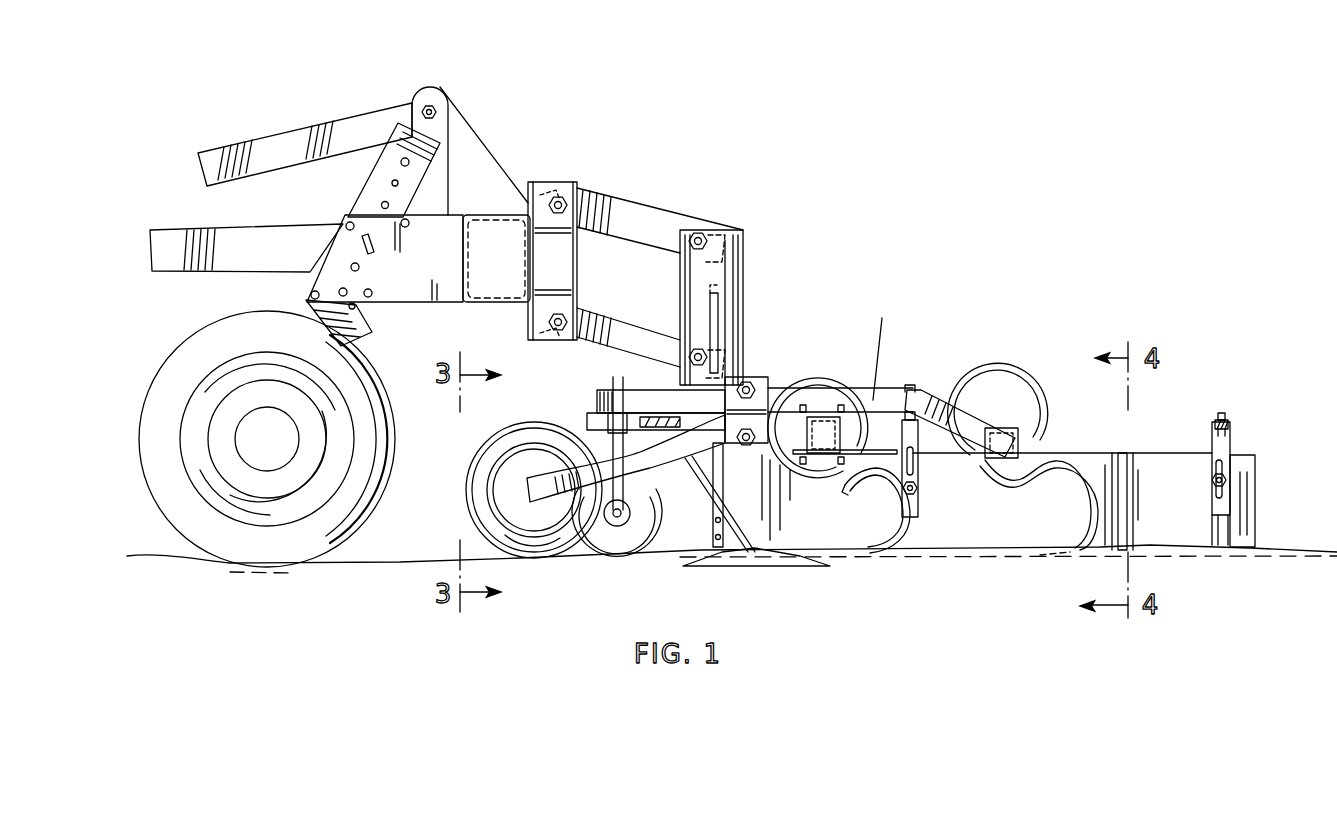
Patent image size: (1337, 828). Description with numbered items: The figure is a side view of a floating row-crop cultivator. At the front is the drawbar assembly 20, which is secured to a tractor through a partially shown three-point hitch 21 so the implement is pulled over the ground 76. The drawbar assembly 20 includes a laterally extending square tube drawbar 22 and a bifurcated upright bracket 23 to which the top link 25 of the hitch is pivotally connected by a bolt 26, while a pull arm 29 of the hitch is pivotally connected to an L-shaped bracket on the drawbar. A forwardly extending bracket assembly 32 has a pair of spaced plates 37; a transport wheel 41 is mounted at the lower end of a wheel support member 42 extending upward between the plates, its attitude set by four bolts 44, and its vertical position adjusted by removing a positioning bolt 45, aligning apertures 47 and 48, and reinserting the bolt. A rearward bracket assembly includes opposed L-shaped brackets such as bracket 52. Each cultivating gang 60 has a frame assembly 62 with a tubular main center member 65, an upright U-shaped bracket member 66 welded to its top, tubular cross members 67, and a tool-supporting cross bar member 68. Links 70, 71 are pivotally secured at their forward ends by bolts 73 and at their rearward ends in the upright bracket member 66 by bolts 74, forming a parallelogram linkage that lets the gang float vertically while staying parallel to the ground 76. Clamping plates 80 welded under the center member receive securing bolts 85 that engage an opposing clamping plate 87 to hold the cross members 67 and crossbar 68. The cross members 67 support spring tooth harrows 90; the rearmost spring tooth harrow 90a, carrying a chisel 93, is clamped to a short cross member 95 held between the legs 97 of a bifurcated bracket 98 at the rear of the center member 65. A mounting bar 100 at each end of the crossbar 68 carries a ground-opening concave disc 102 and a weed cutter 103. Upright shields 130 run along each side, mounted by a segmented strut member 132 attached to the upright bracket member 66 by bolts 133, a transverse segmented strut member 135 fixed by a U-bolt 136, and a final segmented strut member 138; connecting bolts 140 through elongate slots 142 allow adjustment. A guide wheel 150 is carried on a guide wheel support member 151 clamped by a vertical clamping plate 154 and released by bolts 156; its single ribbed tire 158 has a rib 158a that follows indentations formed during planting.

The drawbar assembly 20 is at (447, 66).
The 3-point hitch 21 is at (147, 175).
The square tube drawbar 22 is at (478, 300).
The bifurcated upright bracket 23 is at (452, 113).
The top link 25 is at (282, 140).
The bolt 26 is at (428, 108).
The pull arm 29 is at (172, 232).
The bifurcated forwardly extending bracket assembly 32 is at (326, 203).
The spaced plates 37 is at (412, 305).
The transport wheel 41 is at (198, 415).
The wheel support member 42 is at (307, 313).
The bolts 44 is at (405, 228).
The positioning bolt 45 is at (362, 240).
The apertures 47 is at (354, 309).
The apertures 48 is at (402, 162).
The L-shaped bracket 52 is at (547, 183).
The cultivating gang 60 is at (930, 278).
The frame assembly 62 is at (760, 328).
The main center member 65 is at (880, 346).
The upright U-shaped bracket member 66 is at (730, 253).
The tubular cross members 67 is at (827, 417).
The tool-supporting cross bar member 68 is at (650, 393).
The link 70 is at (650, 216).
The link 71 is at (627, 333).
The bolts 73 is at (562, 203).
The bolts 74 is at (701, 236).
The ground 76 is at (340, 594).
The clamping plates 80 is at (665, 413).
The securing bolts 85 is at (840, 408).
The opposing clamping plate 87 is at (686, 432).
The spring tooth harrows 90 is at (907, 527).
The rearmost spring tooth harrow 90a is at (1002, 380).
The chisel 93 is at (1057, 557).
The short cross member 95 is at (1018, 438).
The legs 97 is at (977, 427).
The bifurcated bracket 98 is at (940, 403).
The mounting bar 100 is at (587, 423).
The ground-opening concave disc 102 is at (613, 560).
The weed cutter 103 is at (722, 553).
The upright shields 130 is at (1142, 470).
The segmented strut member 132 is at (712, 320).
The bolts 133 is at (720, 295).
The segmented strut member 135 is at (918, 467).
The U-bolt 136 is at (910, 385).
The final segmented strut member 138 is at (1228, 443).
The connecting bolts 140 is at (1222, 418).
The elongate slots 142 is at (918, 502).
The guide wheel 150 is at (508, 467).
The guide wheel support member 151 is at (497, 478).
The vertical clamping plate 154 is at (733, 440).
The bolts 156 is at (750, 386).
The single ribbed tire 158 is at (480, 500).
The rib 158a is at (522, 550).